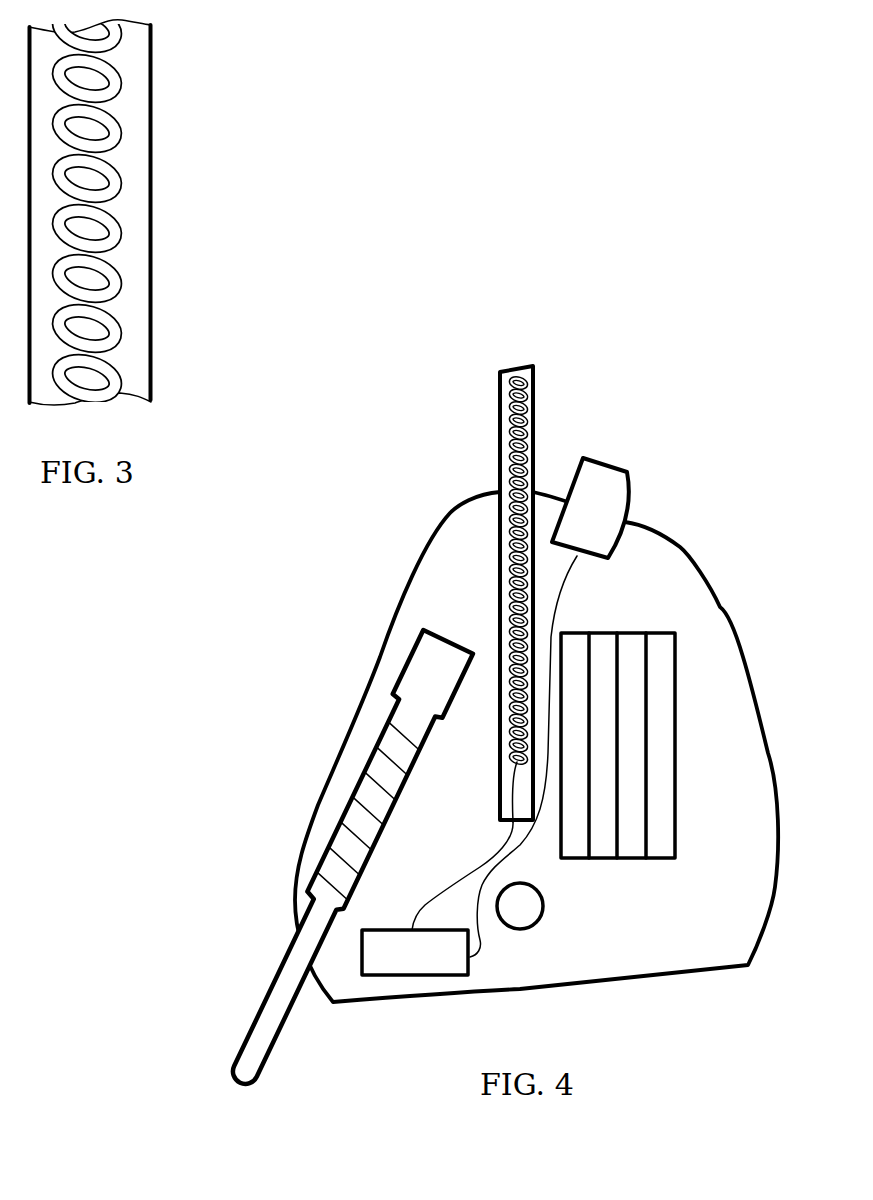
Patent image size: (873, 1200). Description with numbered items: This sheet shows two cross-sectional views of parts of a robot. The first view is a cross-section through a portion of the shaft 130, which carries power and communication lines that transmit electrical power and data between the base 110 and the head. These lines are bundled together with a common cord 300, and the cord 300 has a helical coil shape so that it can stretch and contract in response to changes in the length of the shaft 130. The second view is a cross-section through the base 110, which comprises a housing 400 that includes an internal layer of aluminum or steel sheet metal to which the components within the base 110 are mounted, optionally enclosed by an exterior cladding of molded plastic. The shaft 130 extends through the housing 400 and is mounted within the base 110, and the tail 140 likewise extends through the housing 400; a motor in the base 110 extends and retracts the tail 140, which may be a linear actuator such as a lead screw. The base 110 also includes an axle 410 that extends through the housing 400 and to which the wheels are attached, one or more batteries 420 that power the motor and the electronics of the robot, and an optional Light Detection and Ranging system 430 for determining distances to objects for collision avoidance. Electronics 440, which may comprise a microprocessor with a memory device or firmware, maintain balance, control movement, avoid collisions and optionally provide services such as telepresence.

In FIG. 4, the base 110 is at (480, 730).
In FIG. 3, the shaft 130 is at (135, 205).
In FIG. 4, the shaft 130 is at (500, 413).
In FIG. 4, the tail 140 is at (280, 966).
In FIG. 3, the cord 300 is at (122, 199).
In FIG. 4, the housing 400 is at (450, 513).
In FIG. 4, the axle 410 is at (545, 908).
In FIG. 4, the batteries 420 is at (675, 665).
In FIG. 4, the Light Detection and Ranging (LIDAR) system 430 is at (627, 493).
In FIG. 4, the electronics 440 is at (470, 959).